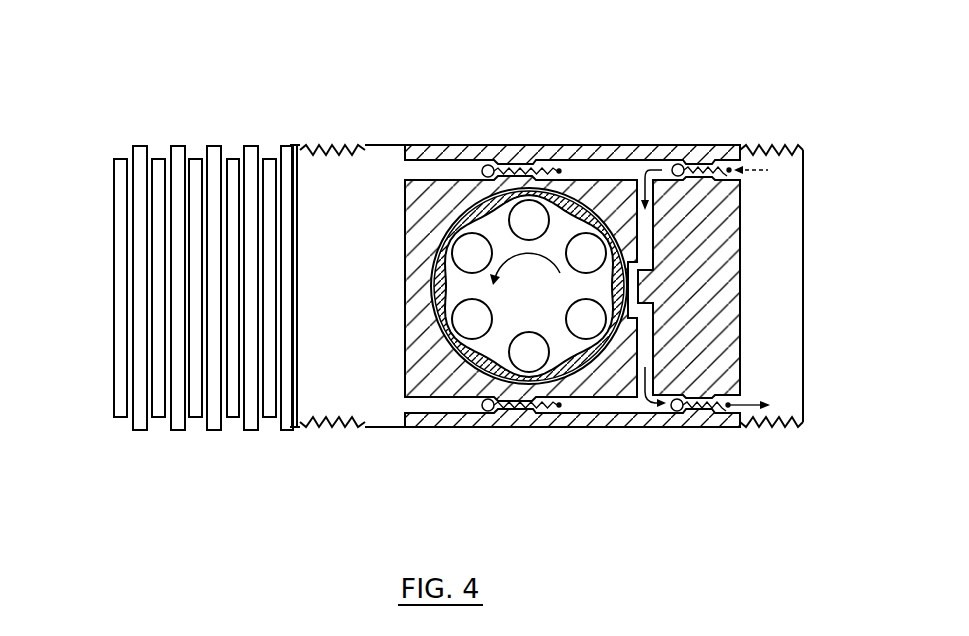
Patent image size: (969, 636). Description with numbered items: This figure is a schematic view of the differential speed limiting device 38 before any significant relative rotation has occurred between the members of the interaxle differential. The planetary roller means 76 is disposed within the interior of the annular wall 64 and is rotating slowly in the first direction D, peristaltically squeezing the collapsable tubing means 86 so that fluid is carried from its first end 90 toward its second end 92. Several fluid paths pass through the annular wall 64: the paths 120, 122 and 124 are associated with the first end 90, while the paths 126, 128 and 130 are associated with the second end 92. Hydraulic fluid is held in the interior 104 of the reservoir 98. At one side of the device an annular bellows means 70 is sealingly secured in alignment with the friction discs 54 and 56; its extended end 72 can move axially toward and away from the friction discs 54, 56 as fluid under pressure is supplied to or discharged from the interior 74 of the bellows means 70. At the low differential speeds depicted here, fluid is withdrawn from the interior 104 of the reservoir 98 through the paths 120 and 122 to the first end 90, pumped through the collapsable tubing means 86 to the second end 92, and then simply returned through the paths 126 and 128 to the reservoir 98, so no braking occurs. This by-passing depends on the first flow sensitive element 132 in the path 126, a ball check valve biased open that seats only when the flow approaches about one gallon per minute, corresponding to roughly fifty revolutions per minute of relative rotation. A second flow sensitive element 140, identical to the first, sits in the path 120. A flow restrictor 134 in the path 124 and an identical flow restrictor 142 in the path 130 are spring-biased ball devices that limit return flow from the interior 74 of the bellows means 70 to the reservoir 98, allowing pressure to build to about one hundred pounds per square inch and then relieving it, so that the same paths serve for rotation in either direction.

The differential speed limiting device 38 is at (559, 100).
The friction discs 54 is at (213, 152).
The friction discs 56 is at (238, 413).
The annular wall 64 is at (423, 375).
The annular bellows means 70 is at (391, 145).
The extended end 72 is at (303, 213).
The interior of the annular bellows means 74 is at (348, 168).
The planetary roller means 76 is at (539, 322).
The collapsable tubing means 86 is at (481, 378).
The first end of the collapsable tubing means 90 is at (620, 218).
The second end of the collapsable tubing means 92 is at (618, 355).
The reservoir 98 is at (805, 193).
The interior of the reservoir 104 is at (780, 258).
The path 120 is at (733, 167).
The path 122 is at (647, 230).
The path 124 is at (435, 172).
The path 126 is at (742, 415).
The path 128 is at (647, 330).
The path 130 is at (432, 403).
The first flow sensitive element 132 is at (703, 426).
The flow restrictor 134 is at (520, 150).
The second flow sensitive element 140 is at (697, 146).
The flow restrictor 142 is at (517, 436).